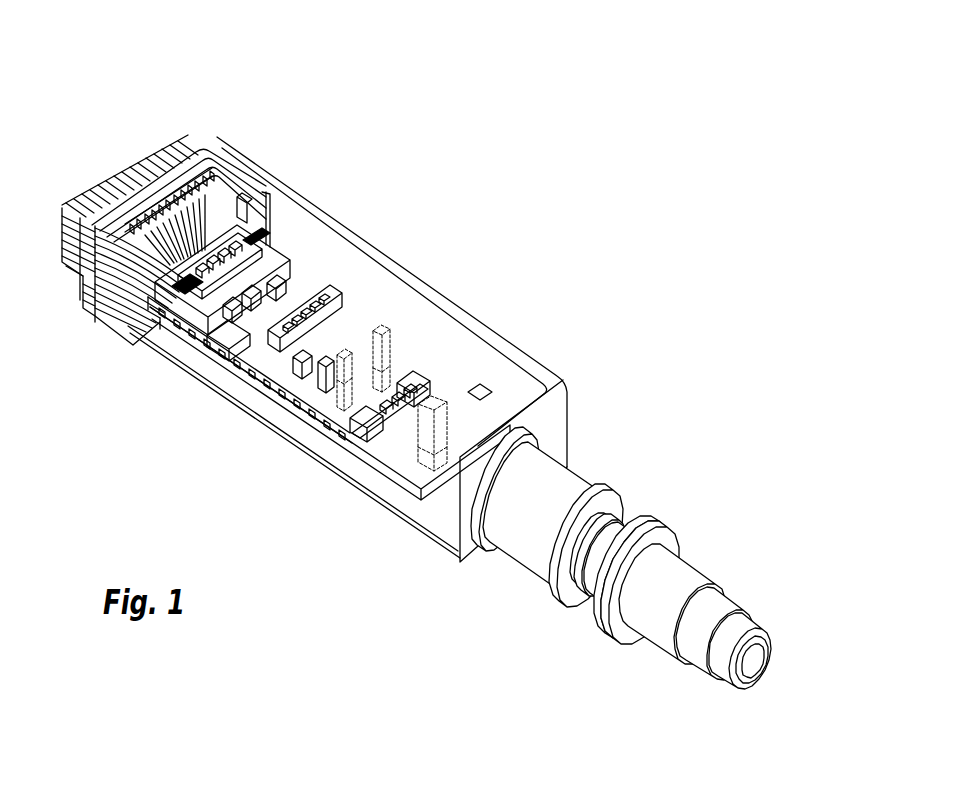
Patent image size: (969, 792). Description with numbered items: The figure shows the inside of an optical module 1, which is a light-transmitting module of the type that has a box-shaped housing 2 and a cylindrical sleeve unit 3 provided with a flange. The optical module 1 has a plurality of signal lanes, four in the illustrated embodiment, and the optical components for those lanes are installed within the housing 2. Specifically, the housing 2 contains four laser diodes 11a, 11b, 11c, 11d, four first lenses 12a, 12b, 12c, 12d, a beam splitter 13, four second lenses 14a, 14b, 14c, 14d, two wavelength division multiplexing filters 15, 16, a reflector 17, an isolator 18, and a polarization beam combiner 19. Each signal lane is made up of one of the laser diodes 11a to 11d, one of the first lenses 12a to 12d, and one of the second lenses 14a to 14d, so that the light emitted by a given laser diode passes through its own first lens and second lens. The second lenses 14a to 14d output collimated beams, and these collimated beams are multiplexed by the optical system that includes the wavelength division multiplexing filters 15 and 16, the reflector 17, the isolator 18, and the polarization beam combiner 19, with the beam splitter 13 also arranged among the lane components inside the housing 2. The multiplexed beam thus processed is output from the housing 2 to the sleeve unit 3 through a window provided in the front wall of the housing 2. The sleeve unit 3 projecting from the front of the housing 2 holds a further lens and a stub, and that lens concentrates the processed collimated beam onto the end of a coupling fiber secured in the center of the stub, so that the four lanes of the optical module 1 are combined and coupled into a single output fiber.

The optical module 1 is at (520, 72).
The housing 2 is at (556, 383).
The sleeve unit 3 is at (540, 450).
The laser diode 11a is at (240, 212).
The laser diode 11b is at (222, 200).
The laser diode 11c is at (98, 320).
The laser diode 11d is at (183, 333).
The first lens 12a is at (293, 253).
The first lens 12b is at (283, 243).
The first lens 12c is at (206, 362).
The first lens 12d is at (182, 358).
The beam splitter 13 is at (220, 384).
The second lens 14a is at (345, 360).
The second lens 14b is at (328, 372).
The second lens 14c is at (316, 332).
The second lens 14d is at (288, 370).
The wavelength division multiplexing filter 15 is at (381, 345).
The wavelength division multiplexing filter 16 is at (333, 428).
The reflector 17 is at (413, 377).
The isolator 18 is at (437, 423).
The polarization beam combiner 19 is at (480, 388).